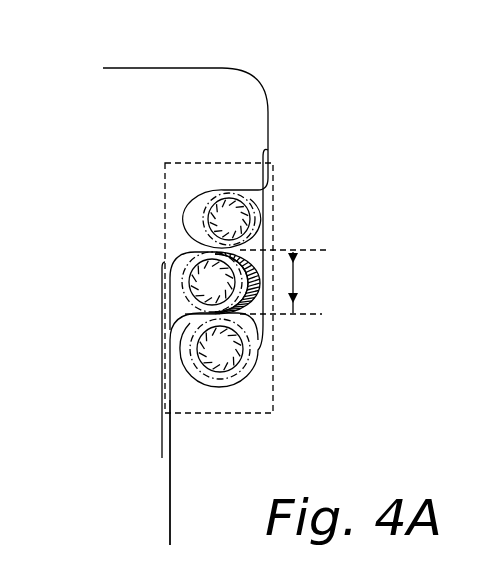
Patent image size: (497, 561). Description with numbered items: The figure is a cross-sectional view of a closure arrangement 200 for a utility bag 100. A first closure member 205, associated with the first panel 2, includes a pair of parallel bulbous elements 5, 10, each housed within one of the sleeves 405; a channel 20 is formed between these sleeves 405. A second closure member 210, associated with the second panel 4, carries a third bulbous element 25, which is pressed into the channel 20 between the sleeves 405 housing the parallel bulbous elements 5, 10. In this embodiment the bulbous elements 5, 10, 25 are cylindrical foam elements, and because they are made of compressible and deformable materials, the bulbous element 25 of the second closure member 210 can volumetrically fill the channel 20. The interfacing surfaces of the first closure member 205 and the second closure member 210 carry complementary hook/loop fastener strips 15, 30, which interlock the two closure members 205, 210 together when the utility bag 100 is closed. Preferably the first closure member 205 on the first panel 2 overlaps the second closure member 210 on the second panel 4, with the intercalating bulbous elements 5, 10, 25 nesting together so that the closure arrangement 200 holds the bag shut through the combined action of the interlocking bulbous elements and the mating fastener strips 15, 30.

The utility bag 100 is at (216, 277).
The first panel 2 is at (268, 108).
The second panel 4 is at (169, 517).
The bulbous element 5 is at (242, 232).
The third bulbous element 25 is at (226, 296).
The bulbous element 10 is at (233, 361).
The first closure member 205 is at (203, 185).
The second closure member 210 is at (164, 258).
The sleeves 405 is at (185, 288).
The hook/loop fastener strip 15 is at (257, 297).
The hook/loop fastener strip 30 is at (231, 283).
The channel 20 is at (293, 283).
The closure arrangement 200 is at (228, 414).